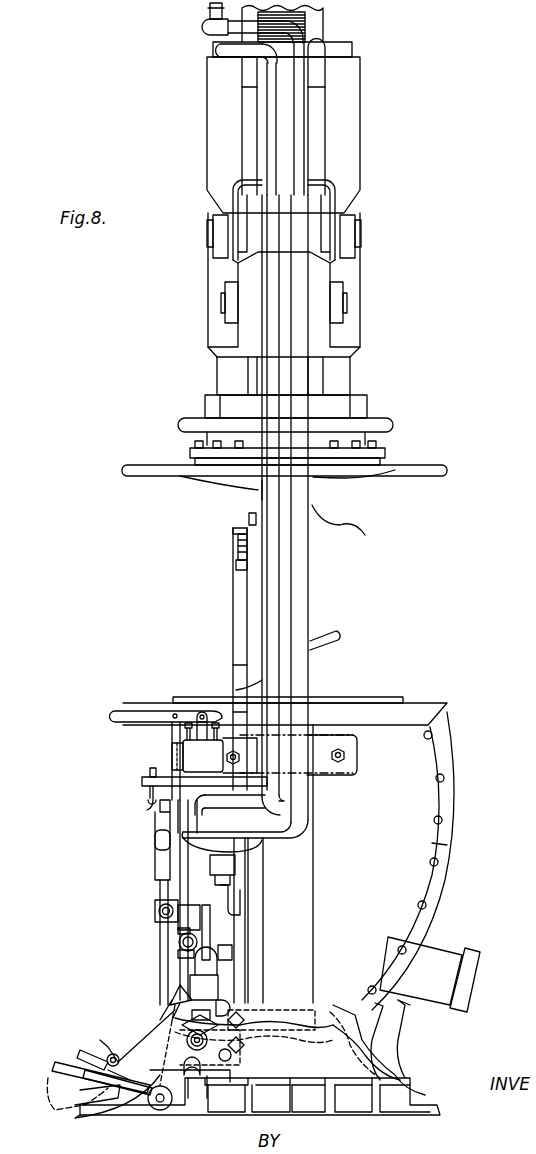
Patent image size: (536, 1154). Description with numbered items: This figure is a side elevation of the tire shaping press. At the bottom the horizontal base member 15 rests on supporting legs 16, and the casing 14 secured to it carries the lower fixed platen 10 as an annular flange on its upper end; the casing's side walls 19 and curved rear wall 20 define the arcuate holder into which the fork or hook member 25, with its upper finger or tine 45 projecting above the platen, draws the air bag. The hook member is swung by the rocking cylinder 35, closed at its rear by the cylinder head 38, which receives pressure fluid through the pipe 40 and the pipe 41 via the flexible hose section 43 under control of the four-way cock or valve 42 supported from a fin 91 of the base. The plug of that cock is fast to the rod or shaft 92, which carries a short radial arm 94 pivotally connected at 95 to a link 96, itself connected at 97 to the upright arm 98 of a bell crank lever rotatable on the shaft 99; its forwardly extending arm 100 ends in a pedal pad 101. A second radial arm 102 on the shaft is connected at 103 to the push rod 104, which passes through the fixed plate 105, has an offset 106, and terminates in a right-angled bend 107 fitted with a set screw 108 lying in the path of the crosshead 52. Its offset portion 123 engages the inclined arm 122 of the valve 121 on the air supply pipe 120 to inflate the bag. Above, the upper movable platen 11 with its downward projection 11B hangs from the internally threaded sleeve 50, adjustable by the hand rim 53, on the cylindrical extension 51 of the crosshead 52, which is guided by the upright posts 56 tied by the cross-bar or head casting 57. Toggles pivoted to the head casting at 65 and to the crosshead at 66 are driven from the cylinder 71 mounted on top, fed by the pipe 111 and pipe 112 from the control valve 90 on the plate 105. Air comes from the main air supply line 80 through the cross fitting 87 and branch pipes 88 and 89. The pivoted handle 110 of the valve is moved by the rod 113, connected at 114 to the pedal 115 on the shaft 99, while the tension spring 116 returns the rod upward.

The cylinder 71 is at (323, 24).
The cross-bar or head casting 57 is at (283, 135).
The pivot of toggle members to head casting 65 is at (208, 240).
The pivotal connection of toggle members to crosshead 66 is at (222, 302).
The crosshead 52 is at (210, 337).
The cylindrical extension 51 is at (217, 372).
The hand rim 53 is at (189, 418).
The internally threaded sleeve 50 is at (198, 443).
The upper movable platen 11 is at (150, 480).
The upright posts 56 is at (260, 492).
The adjustable abutment or set screw 108 is at (247, 519).
The right-angled bend 107 is at (232, 531).
The downward projection 11B is at (345, 525).
The pipe 111 is at (300, 577).
The pipe 112 is at (275, 610).
The upper finger or tine 45 is at (330, 633).
The fork or hook member 25 is at (236, 684).
The offset 106 is at (233, 688).
The pivoted handle 110 is at (122, 710).
The lower fixed platen 10 is at (285, 850).
The rod 113 is at (172, 736).
The control valve 90 is at (264, 755).
The fixed plate 105 is at (140, 781).
The casing 14 is at (452, 797).
The tension spring 116 is at (152, 812).
The curved rear wall 20 is at (447, 845).
The air supply pipe 120 is at (235, 852).
The side walls 19 is at (361, 874).
The branch pipe 89 is at (165, 878).
The push rod 104 is at (255, 890).
The main air supply line 80 is at (158, 908).
The cross fitting 87 is at (155, 912).
The valve 121 is at (176, 930).
The offset portion 123 is at (178, 947).
The inclined arm 122 is at (176, 955).
The branch pipe 88 is at (158, 970).
The pipe 41 is at (200, 982).
The pivotal connection 97 is at (170, 992).
The link 96 is at (218, 1000).
The cylinder head 38 is at (478, 952).
The rocking cylinder 35 is at (421, 971).
The connection of rod to pedal 114 is at (103, 1042).
The pedal 115 is at (80, 1040).
The pivotal connection 95 is at (245, 1015).
The short radial arm 94 is at (248, 1033).
The pedal pad 101 is at (58, 1066).
The upright arm of bell crank lever 98 is at (168, 1050).
The connection of arm to push rod 103 is at (240, 1055).
The flexible hose section 43 is at (420, 1040).
The forwardly extending arm 100 is at (100, 1078).
The fin 91 is at (100, 1100).
The supporting legs 16 is at (445, 1068).
The four-way cock or valve 42 is at (190, 1080).
The radial arm 102 is at (228, 1092).
The pipe 40 is at (250, 1065).
The base member 15 is at (343, 1082).
The shaft 99 is at (155, 1108).
The rod or shaft 92 is at (185, 1060).